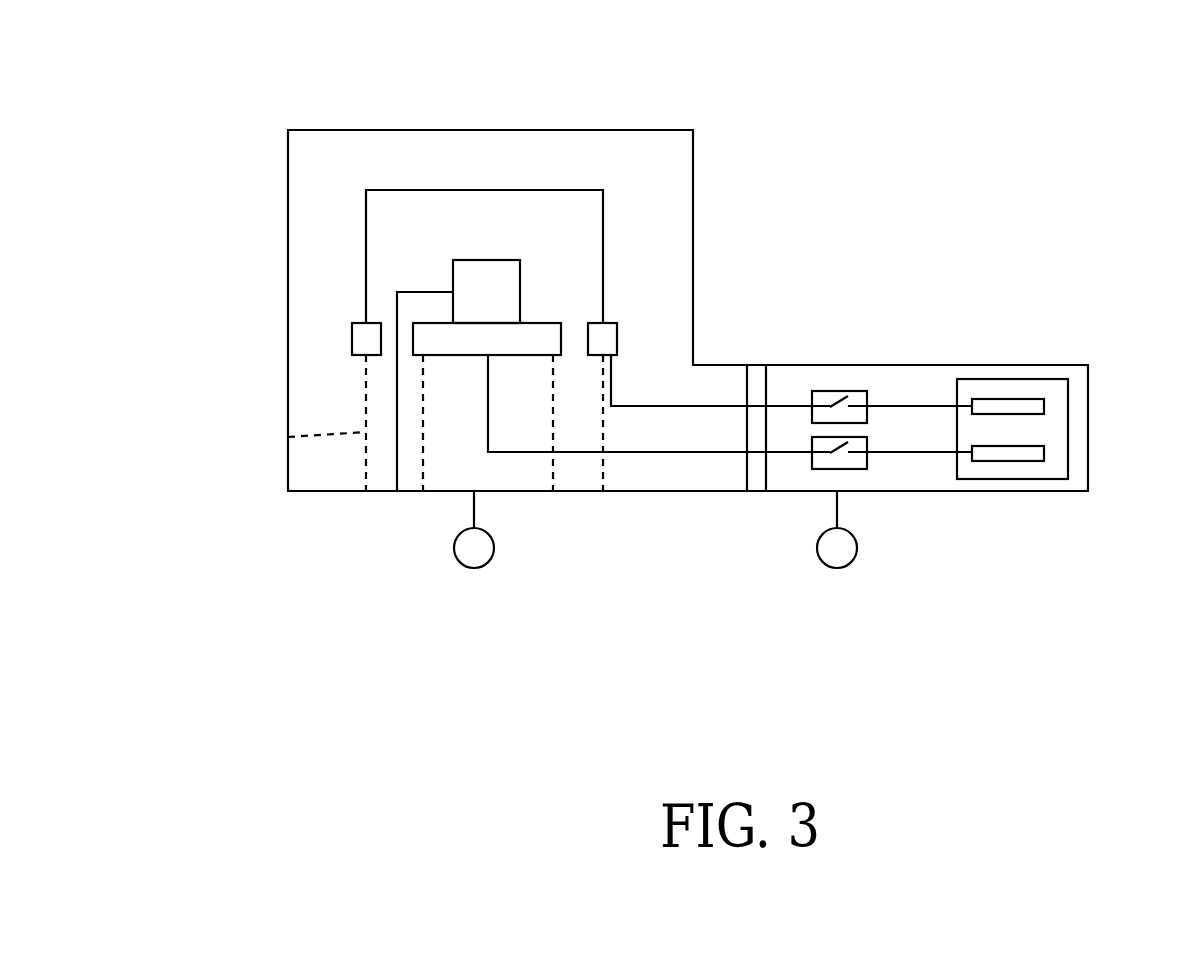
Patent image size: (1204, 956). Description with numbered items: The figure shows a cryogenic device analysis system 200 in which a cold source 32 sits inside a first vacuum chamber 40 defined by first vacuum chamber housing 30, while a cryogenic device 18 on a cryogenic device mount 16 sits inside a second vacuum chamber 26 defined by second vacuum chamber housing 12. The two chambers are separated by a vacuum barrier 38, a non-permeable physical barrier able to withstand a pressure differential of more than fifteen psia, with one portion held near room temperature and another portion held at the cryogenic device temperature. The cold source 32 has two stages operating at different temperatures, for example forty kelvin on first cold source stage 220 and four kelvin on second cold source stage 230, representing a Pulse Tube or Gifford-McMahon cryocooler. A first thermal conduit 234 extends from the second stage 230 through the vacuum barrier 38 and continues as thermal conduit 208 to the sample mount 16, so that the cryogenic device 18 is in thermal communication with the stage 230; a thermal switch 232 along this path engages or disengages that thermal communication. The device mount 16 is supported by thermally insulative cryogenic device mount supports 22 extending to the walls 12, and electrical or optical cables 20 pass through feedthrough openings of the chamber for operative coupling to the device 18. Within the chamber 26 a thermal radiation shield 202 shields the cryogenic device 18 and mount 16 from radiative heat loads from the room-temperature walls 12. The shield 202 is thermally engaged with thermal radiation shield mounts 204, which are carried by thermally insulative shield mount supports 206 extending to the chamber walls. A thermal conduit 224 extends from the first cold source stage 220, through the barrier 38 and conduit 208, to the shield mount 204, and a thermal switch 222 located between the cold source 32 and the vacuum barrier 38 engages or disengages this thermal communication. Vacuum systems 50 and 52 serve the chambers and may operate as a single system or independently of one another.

The cryogenic device analysis system 200 is at (928, 108).
The second vacuum chamber housing 12 is at (452, 130).
The second vacuum chamber 26 is at (318, 188).
The thermal radiation shield 202 is at (603, 217).
The thermal radiation shield mount 204 is at (352, 337).
The thermally insulative shield mount supports 206 is at (288, 438).
The cryogenic device 18 is at (488, 260).
The cryogenic device mount 16 is at (543, 323).
The electrical or optical cables 20 is at (397, 468).
The thermally insulative cryogenic device mount supports 22 is at (423, 473).
The thermal conduit 208 is at (678, 406).
The vacuum barrier 38 is at (757, 378).
The thermal switch 222 is at (850, 391).
The thermal switch 232 is at (847, 469).
The thermal conduit 224 is at (902, 406).
The first thermal conduit 234 is at (900, 452).
The cold source 32 is at (1068, 428).
The first cold source stage 220 is at (1044, 406).
The second cold source stage 230 is at (1044, 453).
The first vacuum chamber 40 is at (942, 482).
The first vacuum chamber housing 30 is at (793, 491).
The vacuum system 50 is at (454, 548).
The vacuum system 52 is at (817, 548).